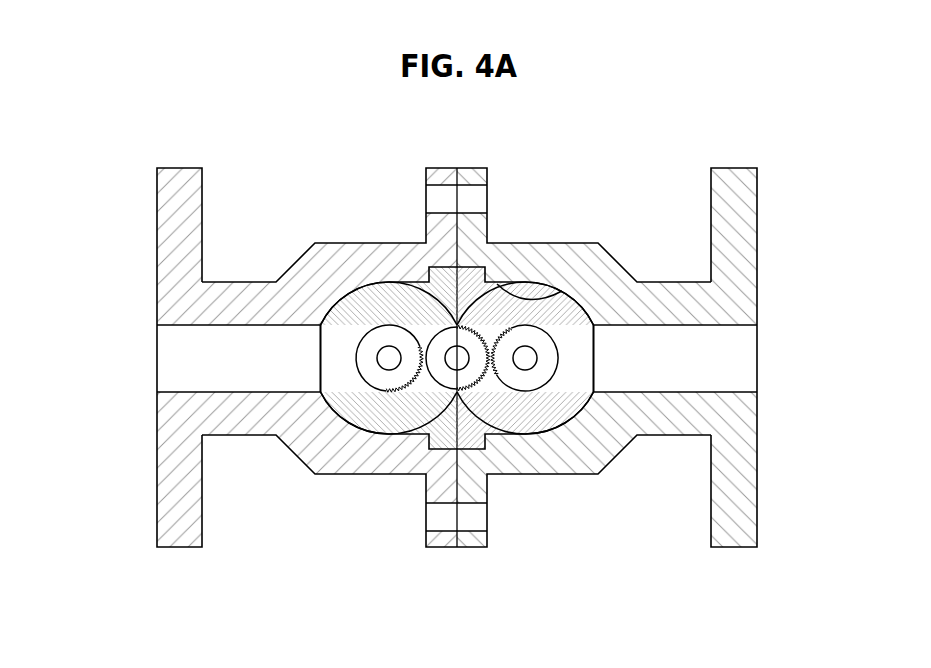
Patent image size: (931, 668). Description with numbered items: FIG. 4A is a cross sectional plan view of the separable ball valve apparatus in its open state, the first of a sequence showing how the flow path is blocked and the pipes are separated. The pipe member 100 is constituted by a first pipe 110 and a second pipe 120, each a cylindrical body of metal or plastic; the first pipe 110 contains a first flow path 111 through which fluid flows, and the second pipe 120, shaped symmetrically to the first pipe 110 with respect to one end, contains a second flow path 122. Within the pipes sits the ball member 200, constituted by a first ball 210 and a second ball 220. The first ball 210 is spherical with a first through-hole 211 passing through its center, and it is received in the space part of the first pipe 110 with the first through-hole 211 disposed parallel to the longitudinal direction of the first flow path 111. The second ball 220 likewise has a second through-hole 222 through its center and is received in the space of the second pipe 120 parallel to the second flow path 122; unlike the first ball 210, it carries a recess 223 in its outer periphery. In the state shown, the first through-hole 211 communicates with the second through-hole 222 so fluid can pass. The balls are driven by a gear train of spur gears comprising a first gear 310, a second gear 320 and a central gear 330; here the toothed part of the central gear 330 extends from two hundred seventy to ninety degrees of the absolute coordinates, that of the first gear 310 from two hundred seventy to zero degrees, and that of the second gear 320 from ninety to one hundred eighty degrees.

The pipe member 100 is at (247, 441).
The first pipe 110 is at (166, 210).
The first flow path 111 is at (193, 367).
The second pipe 120 is at (748, 228).
The second flow path 122 is at (716, 362).
The ball member 200 is at (346, 414).
The first ball 210 is at (335, 302).
The first through-hole 211 is at (352, 343).
The second ball 220 is at (588, 314).
The second through-hole 222 is at (578, 352).
The recess 223 is at (512, 295).
The first gear 310 is at (388, 380).
The second gear 320 is at (537, 380).
The central gear 330 is at (473, 383).